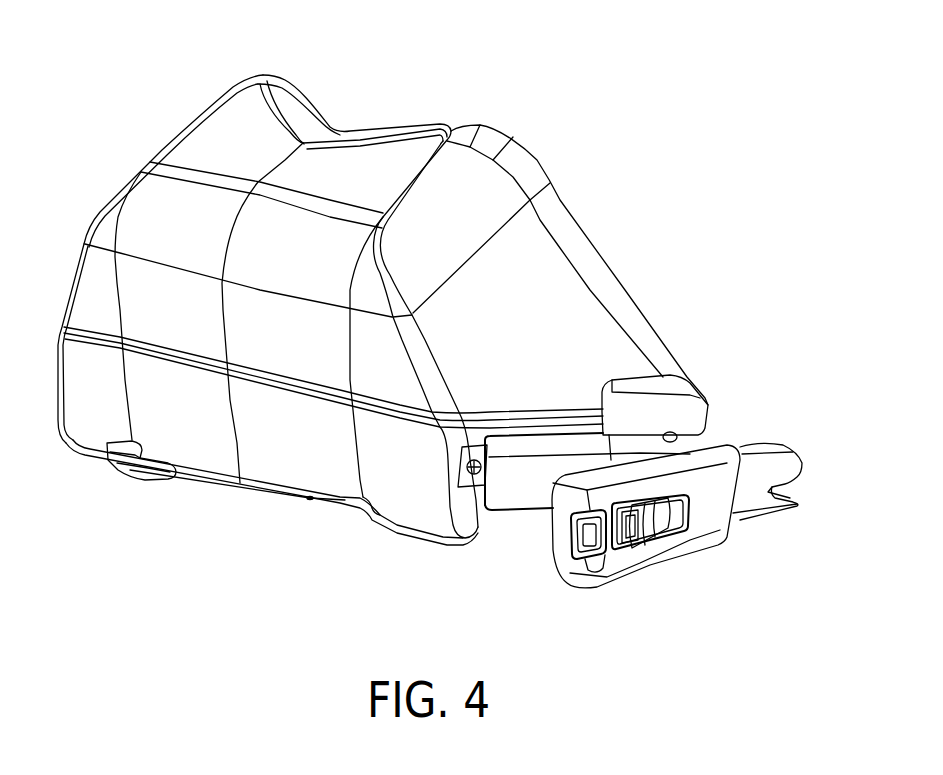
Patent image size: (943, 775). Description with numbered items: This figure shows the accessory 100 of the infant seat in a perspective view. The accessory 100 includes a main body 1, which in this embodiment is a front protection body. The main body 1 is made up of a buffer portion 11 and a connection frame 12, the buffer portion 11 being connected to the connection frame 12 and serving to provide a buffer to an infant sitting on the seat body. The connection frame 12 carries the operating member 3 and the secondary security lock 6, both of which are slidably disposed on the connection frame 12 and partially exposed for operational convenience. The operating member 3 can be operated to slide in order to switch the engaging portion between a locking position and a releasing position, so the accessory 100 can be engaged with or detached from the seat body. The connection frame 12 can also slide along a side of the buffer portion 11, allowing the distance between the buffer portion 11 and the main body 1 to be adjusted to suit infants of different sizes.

The accessory 100 is at (91, 44).
The main body 1 is at (467, 608).
The buffer portion 11 is at (388, 487).
The connection frame 12 is at (525, 487).
The operating member 3 is at (660, 532).
The secondary security lock 6 is at (588, 565).